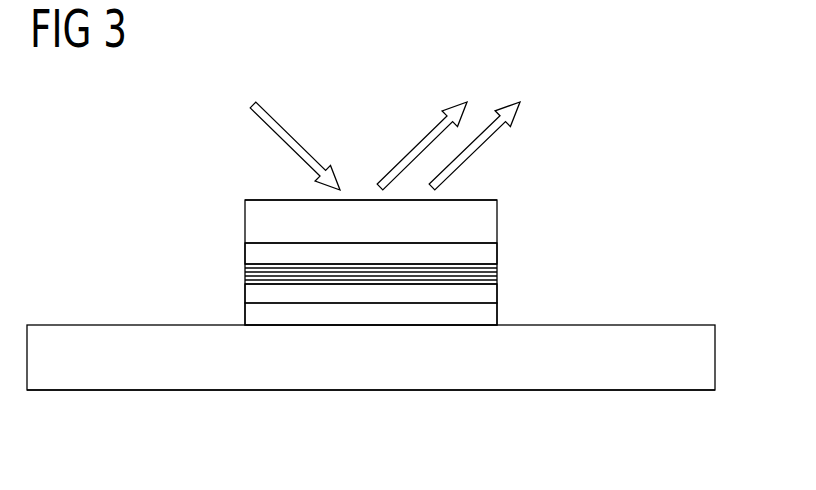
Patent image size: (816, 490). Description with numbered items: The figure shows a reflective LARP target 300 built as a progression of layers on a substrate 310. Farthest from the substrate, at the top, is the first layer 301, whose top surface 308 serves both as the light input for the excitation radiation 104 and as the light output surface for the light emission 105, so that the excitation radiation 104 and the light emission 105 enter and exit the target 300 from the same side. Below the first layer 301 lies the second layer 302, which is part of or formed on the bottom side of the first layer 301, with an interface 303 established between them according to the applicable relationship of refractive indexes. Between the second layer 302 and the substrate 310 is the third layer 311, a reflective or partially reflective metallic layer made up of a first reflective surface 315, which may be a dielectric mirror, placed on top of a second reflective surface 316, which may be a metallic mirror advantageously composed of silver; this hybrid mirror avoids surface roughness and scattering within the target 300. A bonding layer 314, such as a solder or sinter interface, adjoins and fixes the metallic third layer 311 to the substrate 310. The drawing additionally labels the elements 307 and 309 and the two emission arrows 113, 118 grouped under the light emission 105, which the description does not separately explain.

The LARP target 300 is at (654, 111).
The first layer 301 is at (483, 213).
The second layer 302 is at (247, 255).
The interface 303 is at (247, 233).
The carrier 307 is at (373, 392).
The surface 308 is at (298, 200).
The radiation exit surface 309 is at (482, 200).
The substrate 310 is at (478, 378).
The third layer 311 is at (513, 267).
The bonding layer 314 is at (290, 317).
The first reflective surface 315 is at (483, 261).
The second reflective surface 316 is at (247, 295).
The excitation radiation 104 is at (272, 112).
The light emission 105 is at (533, 93).
The first emitted radiation component 113 is at (420, 145).
The second emitted radiation component 118 is at (497, 137).